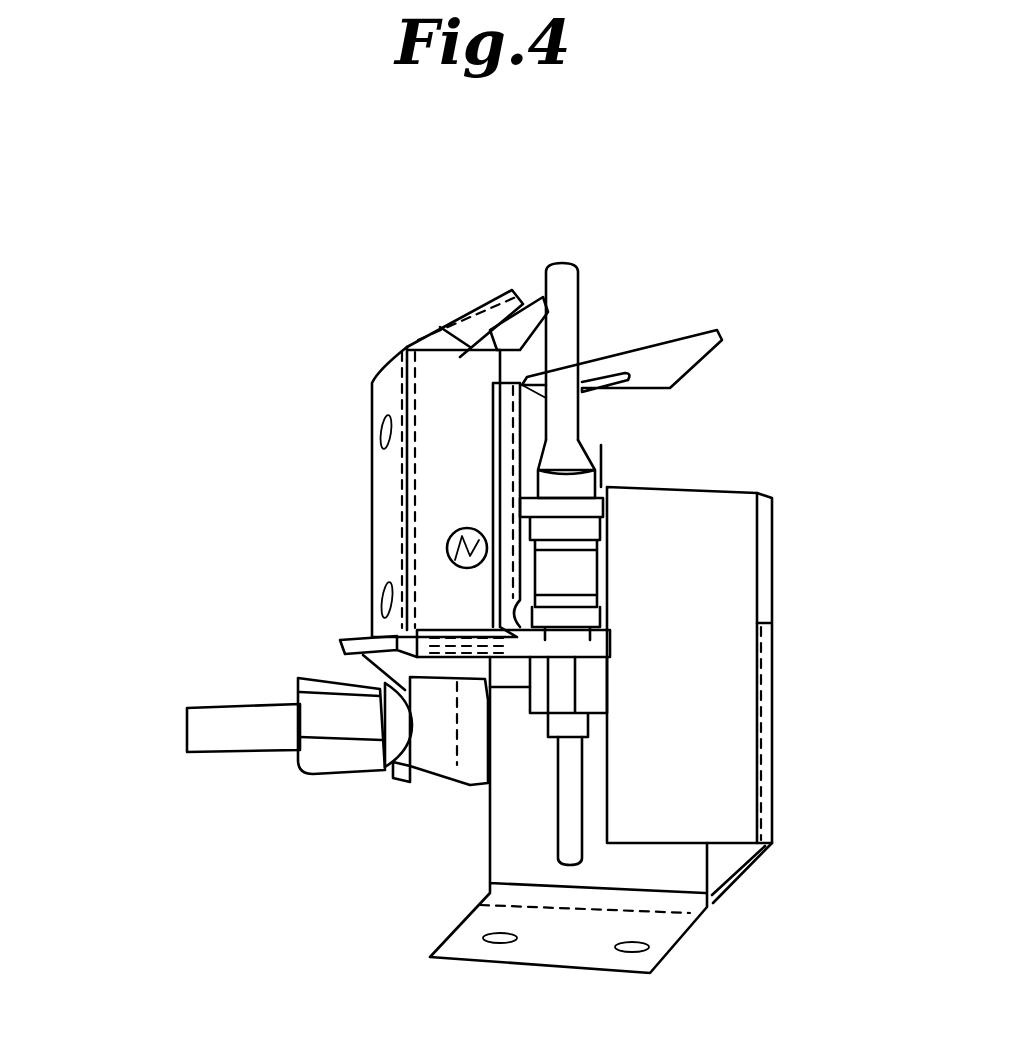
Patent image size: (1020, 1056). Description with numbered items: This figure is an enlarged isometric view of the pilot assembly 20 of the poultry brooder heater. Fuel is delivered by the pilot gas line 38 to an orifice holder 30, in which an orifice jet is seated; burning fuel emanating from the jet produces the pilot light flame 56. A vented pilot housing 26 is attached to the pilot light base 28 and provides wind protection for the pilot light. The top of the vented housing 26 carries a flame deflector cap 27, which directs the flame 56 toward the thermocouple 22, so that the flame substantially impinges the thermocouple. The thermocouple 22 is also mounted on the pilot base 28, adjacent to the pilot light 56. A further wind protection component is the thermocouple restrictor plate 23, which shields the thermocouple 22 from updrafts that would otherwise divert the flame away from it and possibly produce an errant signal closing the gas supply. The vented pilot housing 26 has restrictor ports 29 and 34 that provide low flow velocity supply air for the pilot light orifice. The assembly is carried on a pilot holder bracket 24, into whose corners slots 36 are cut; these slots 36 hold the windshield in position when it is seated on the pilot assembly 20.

The pilot assembly 20 is at (185, 416).
The thermocouple 22 is at (600, 470).
The thermocouple restrictor plate 23 is at (655, 332).
The pilot holder bracket 24 is at (725, 723).
The vented pilot housing 26 is at (368, 385).
The flame deflector cap 27 is at (486, 300).
The pilot light base 28 is at (395, 655).
The restrictor port 29 is at (372, 422).
The orifice holder 30 is at (425, 777).
The restrictor port 34 is at (450, 532).
The slots 36 is at (765, 569).
The pilot gas line 38 is at (247, 742).
The pilot light flame 56 is at (532, 306).